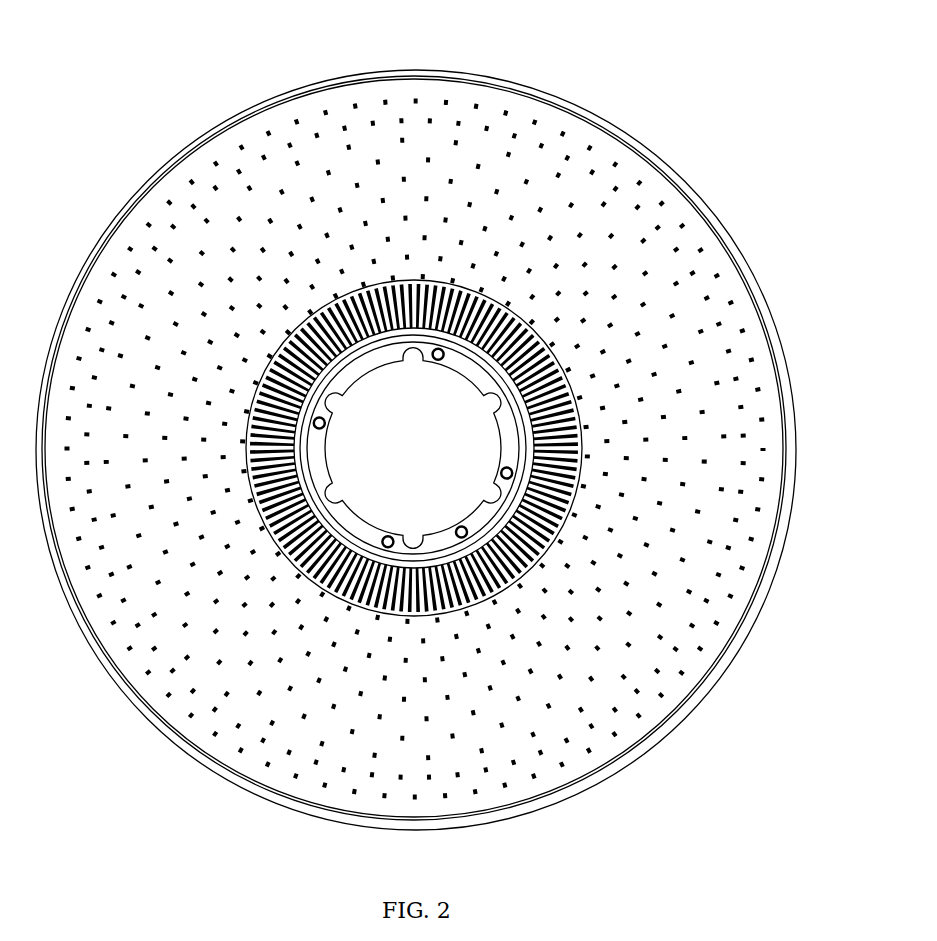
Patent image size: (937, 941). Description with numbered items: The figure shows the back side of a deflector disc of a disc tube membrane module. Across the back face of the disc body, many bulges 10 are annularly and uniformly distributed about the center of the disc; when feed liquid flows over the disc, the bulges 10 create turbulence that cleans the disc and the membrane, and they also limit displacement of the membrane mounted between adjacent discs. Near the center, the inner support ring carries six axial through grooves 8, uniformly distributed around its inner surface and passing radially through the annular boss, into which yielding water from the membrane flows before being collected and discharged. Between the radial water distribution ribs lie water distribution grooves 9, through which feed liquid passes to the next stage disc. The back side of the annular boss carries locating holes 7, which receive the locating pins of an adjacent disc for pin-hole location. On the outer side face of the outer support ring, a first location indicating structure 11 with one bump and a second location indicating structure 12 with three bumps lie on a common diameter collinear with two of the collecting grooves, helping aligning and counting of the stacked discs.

The locating hole 7 is at (315, 423).
The axial through groove 8 is at (330, 402).
The water distribution groove 9 is at (303, 357).
The bulge 10 is at (190, 207).
The first location indicating structure 11 is at (412, 833).
The second location indicating structure 12 is at (412, 68).